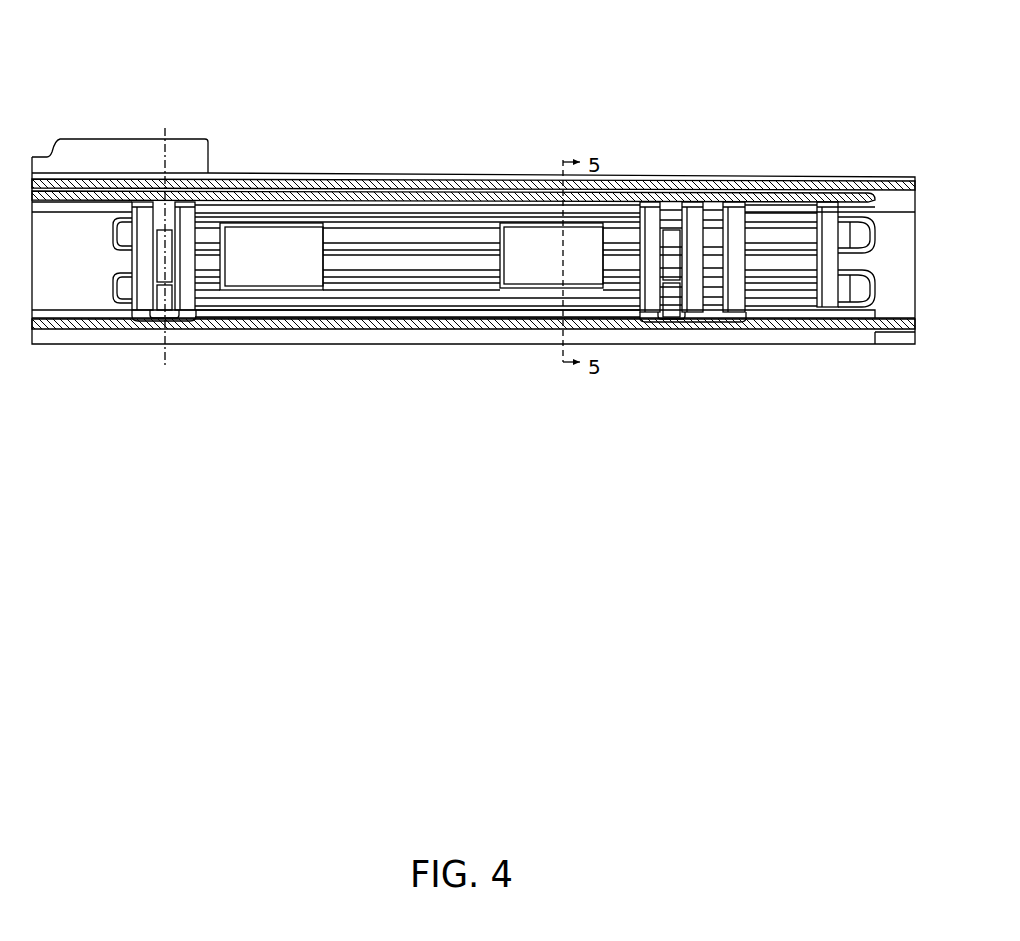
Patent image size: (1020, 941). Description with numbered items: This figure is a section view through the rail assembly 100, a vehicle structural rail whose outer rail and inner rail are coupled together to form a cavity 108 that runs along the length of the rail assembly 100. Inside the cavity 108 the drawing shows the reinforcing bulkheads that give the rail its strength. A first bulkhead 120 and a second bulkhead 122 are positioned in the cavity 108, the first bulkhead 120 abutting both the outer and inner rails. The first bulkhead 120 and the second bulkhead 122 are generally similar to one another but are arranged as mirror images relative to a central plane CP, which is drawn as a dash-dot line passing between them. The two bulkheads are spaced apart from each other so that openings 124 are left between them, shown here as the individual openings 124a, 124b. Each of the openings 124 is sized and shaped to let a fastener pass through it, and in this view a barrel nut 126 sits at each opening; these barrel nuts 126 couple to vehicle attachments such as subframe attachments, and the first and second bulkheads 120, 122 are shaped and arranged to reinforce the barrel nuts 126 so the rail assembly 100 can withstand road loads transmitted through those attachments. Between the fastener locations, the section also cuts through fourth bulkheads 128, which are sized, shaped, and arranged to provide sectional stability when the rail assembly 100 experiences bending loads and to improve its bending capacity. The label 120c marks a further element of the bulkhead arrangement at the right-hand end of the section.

The rail assembly 100 is at (444, 72).
The cavity 108 is at (92, 300).
The central plane CP is at (168, 236).
The first bulkheads 120 is at (693, 322).
The third circuit board terminal 120c is at (830, 312).
The second bulkheads 122 is at (650, 202).
The openings 124 is at (720, 121).
The opening 124a is at (173, 202).
The opening 124b is at (677, 222).
The barrel nut 126 is at (180, 322).
The fourth bulkheads 128 is at (505, 289).